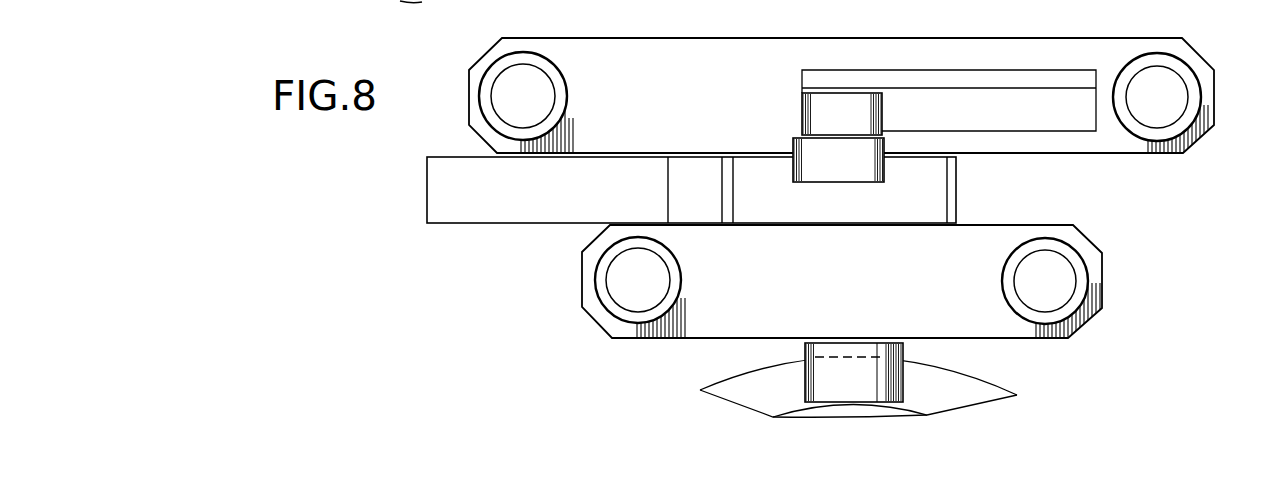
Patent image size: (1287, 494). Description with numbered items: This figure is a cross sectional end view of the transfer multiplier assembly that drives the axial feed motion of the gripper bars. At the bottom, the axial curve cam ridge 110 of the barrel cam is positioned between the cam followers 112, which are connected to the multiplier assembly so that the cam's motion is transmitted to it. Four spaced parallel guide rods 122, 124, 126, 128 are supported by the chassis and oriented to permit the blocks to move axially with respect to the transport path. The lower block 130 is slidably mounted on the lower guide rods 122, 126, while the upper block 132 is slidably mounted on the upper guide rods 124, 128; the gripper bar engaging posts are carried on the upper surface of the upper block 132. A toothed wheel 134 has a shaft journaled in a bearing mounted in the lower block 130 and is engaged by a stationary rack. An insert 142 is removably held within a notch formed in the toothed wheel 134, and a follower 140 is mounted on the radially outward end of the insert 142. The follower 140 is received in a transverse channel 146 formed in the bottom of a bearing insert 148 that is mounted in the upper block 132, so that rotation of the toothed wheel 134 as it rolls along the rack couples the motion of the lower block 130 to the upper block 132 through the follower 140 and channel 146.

The axial curve cam ridge 110 is at (758, 382).
The cam followers 112 is at (880, 380).
The lower guide rod 122 is at (1060, 273).
The upper guide rod 124 is at (1163, 88).
The lower guide rod 126 is at (650, 275).
The upper guide rod 128 is at (537, 87).
The lower block 130 is at (870, 255).
The upper block 132 is at (737, 58).
The toothed wheel 134 is at (928, 190).
The follower 140 is at (818, 117).
The insert 142 is at (818, 160).
The transverse channel 146 is at (1065, 108).
The bearing insert 148 is at (968, 78).